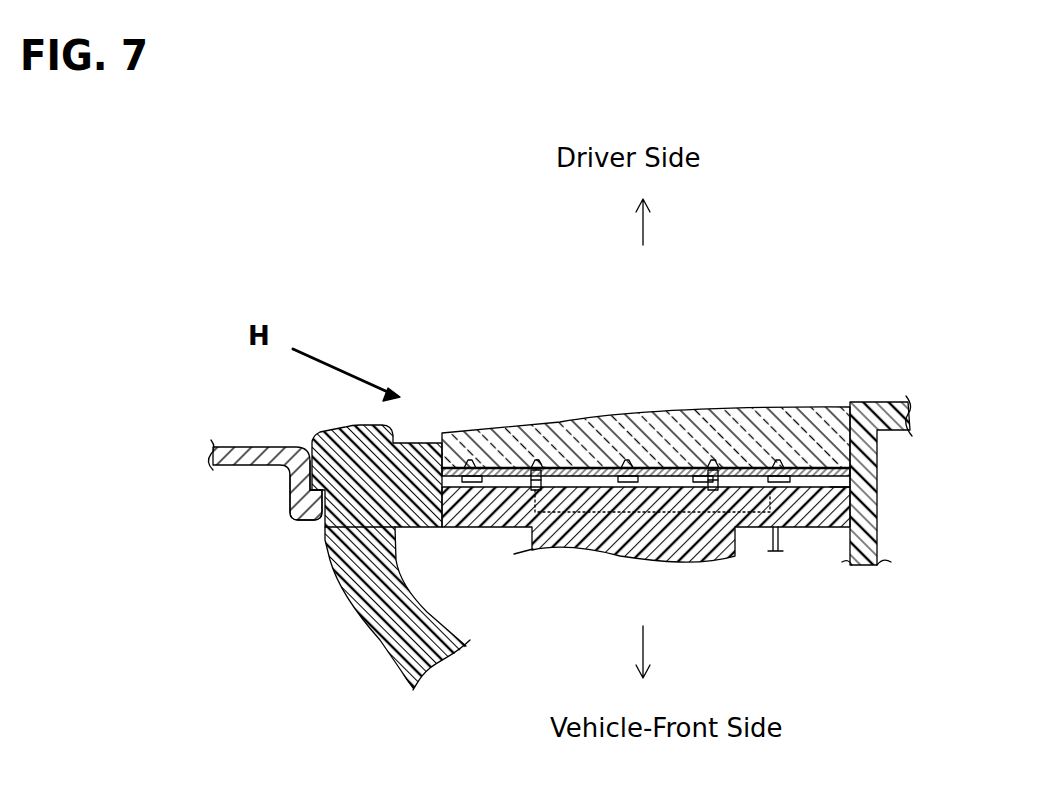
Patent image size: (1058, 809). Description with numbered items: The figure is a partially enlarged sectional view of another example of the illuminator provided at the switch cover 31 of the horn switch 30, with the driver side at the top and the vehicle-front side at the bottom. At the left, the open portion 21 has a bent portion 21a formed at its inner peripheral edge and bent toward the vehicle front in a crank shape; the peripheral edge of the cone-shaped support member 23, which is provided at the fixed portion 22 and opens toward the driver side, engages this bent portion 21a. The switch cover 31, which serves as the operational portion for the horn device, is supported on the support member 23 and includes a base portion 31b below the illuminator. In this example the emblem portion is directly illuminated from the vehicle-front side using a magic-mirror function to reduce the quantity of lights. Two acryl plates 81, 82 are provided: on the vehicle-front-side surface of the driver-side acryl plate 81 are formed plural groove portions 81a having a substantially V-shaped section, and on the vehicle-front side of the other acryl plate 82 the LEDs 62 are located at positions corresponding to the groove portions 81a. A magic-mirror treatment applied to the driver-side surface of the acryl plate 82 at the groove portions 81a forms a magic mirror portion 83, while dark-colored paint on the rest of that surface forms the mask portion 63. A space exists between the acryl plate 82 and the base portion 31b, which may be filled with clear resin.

The open portion 21 is at (248, 468).
The bent portion 21a is at (302, 523).
The support member 23 is at (384, 632).
The switch cover 31 is at (414, 440).
The base portion 31b is at (483, 528).
The horn switch 30 is at (583, 355).
The acryl plate 81 is at (668, 410).
The groove portions 81a is at (626, 461).
The magic mirror portion 83 is at (470, 460).
The mask portion 63 is at (752, 466).
The LEDs 62 is at (541, 484).
The acryl plate 82 is at (827, 480).
The fixed portion 22 is at (841, 350).